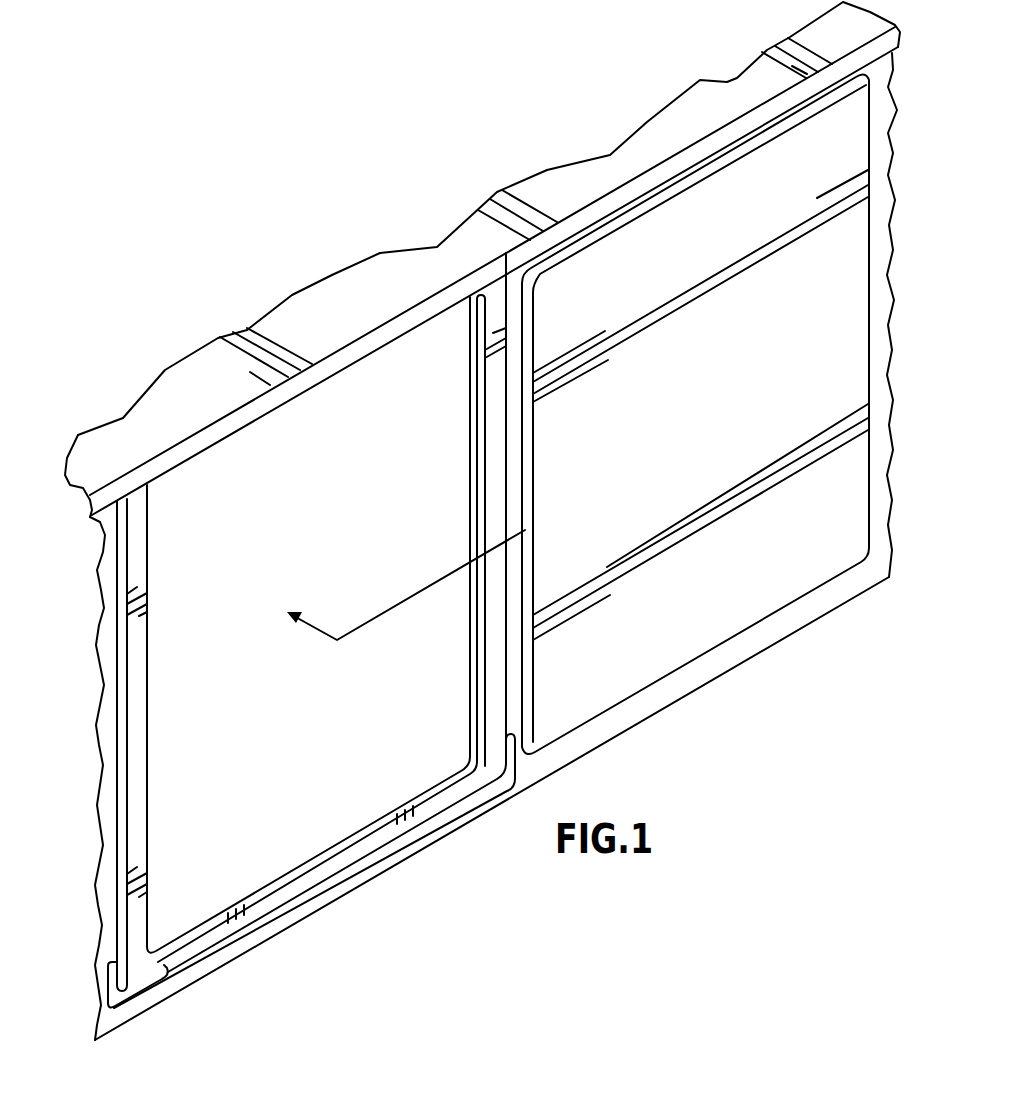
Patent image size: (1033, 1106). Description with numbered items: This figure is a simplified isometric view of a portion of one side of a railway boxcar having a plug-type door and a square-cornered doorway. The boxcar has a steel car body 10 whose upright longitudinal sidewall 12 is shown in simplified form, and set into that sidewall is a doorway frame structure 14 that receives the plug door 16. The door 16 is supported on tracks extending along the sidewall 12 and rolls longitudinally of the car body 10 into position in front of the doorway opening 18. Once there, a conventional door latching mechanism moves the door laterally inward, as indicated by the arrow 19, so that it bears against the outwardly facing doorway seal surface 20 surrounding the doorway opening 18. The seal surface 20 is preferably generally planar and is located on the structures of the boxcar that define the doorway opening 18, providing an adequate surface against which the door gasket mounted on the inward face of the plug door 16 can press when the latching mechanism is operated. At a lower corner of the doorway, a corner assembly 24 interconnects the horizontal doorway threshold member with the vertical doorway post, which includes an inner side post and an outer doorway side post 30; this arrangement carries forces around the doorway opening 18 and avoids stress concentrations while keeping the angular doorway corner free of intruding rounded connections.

The car body 10 is at (305, 290).
The longitudinal sidewall 12 is at (102, 838).
The doorway frame structure 14 is at (156, 799).
The plug door 16 is at (692, 647).
The doorway opening 18 is at (162, 554).
The arrow 19 is at (392, 607).
The doorway seal surface 20 is at (470, 675).
The corner assembly 24 is at (463, 762).
The outer doorway side post 30 is at (140, 662).